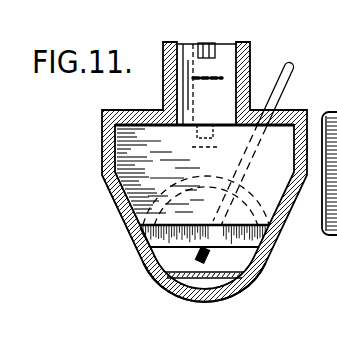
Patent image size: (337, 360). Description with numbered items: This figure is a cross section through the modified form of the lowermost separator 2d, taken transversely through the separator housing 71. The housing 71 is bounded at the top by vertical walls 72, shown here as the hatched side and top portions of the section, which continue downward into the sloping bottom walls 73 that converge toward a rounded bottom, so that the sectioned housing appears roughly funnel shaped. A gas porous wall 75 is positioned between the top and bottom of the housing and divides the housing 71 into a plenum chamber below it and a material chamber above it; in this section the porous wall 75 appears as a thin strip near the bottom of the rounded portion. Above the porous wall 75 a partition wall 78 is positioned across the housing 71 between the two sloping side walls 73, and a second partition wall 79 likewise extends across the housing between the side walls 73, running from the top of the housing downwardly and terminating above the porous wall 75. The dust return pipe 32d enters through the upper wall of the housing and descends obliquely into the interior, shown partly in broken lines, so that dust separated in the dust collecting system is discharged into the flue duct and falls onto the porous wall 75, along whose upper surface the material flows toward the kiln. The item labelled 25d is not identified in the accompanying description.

The lowermost separator 2d is at (188, 172).
The vertical walls 72 is at (102, 134).
The housing 71 is at (118, 204).
The sloping bottom walls 73 is at (138, 245).
The liquid / plug 25d is at (197, 132).
The dust return pipe 32d is at (285, 71).
The partition wall 78 is at (156, 263).
The second partition wall 79 is at (152, 248).
The gas porous wall 75 is at (187, 279).